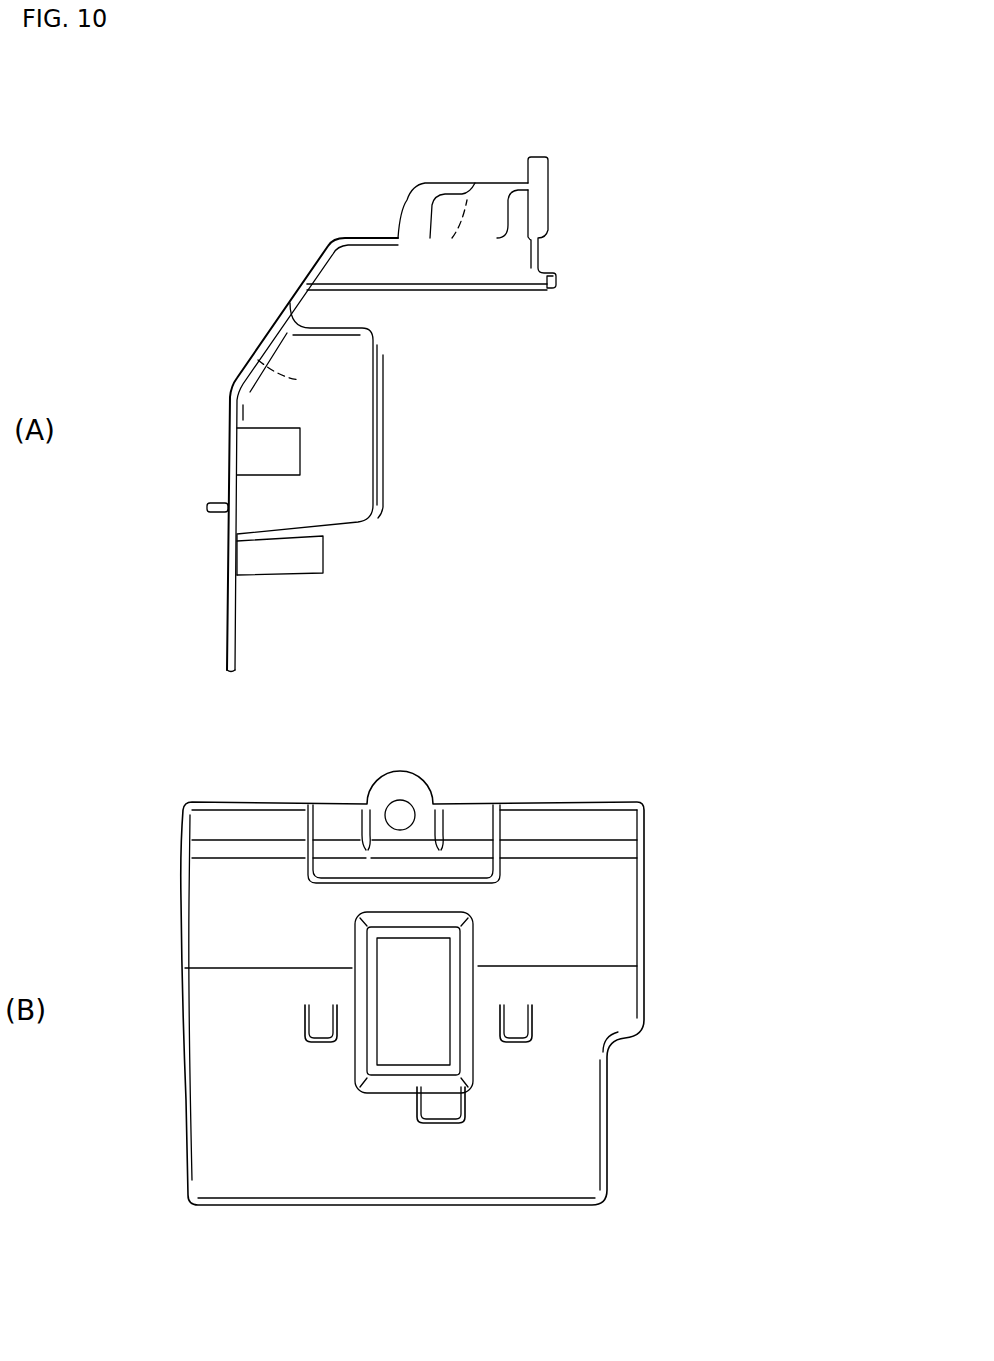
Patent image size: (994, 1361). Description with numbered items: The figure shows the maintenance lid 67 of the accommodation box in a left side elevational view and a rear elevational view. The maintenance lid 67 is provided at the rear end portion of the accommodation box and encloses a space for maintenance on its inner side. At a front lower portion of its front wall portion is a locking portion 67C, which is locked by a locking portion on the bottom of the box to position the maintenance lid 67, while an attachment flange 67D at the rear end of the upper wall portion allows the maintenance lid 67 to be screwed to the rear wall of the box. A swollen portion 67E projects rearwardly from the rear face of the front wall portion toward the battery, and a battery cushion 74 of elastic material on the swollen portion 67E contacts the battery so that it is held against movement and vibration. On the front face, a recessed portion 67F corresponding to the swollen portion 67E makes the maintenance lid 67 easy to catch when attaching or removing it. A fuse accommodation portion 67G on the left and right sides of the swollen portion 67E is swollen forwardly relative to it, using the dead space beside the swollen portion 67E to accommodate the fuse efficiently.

The maintenance lid 67 is at (437, 183).
The locking portion 67C is at (221, 502).
The attachment flange 67D is at (549, 171).
The swollen portion 67E is at (386, 330).
The recessed portion 67F is at (262, 368).
The fuse accommodation portion 67G is at (239, 1098).
The battery cushion 74 is at (384, 514).